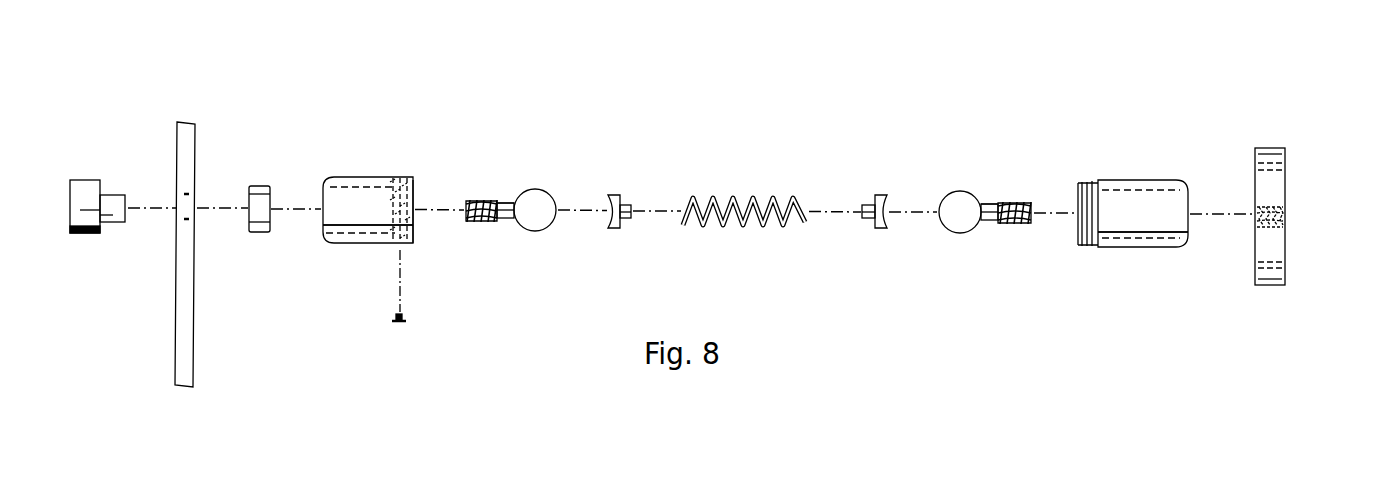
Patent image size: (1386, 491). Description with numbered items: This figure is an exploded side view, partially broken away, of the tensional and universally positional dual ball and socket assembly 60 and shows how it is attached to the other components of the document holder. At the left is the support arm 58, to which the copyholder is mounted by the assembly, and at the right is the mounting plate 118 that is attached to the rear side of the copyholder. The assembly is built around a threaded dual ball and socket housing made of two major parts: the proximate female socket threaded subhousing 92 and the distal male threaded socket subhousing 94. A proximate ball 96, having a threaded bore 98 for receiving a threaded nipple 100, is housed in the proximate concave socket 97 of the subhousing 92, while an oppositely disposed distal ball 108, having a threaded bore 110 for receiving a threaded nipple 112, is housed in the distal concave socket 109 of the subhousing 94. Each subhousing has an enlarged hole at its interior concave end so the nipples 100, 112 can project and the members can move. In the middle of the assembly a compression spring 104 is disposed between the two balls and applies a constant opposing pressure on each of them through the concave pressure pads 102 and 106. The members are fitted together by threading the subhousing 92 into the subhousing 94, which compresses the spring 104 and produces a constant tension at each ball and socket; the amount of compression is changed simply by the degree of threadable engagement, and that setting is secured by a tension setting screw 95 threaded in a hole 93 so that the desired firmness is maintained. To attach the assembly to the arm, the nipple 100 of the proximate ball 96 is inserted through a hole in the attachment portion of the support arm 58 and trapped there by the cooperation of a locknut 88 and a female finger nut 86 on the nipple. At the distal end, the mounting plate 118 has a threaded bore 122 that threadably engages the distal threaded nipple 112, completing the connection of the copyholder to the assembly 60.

The support arm 58 is at (199, 139).
The dual ball and socket assembly 60 is at (644, 88).
The female finger nut 86 is at (84, 180).
The locknut 88 is at (257, 185).
The proximate female socket threaded subhousing 92 is at (360, 176).
The hole 93 is at (408, 243).
The distal male threaded socket subhousing 94 is at (1146, 180).
The tension setting screw 95 is at (398, 326).
The proximate ball 96 is at (540, 231).
The proximate concave socket 97 is at (365, 236).
The threaded bore 98 is at (512, 196).
The threaded nipple 100 is at (478, 200).
The concave pressure pad 102 is at (617, 195).
The compression spring 104 is at (740, 198).
The concave pressure pad 106 is at (868, 196).
The distal ball 108 is at (960, 234).
The distal concave socket 109 is at (1125, 241).
The threaded bore 110 is at (986, 201).
The threaded nipple 112 is at (1017, 226).
The mounting plate 118 is at (1288, 228).
The threaded bore 122 is at (1288, 217).